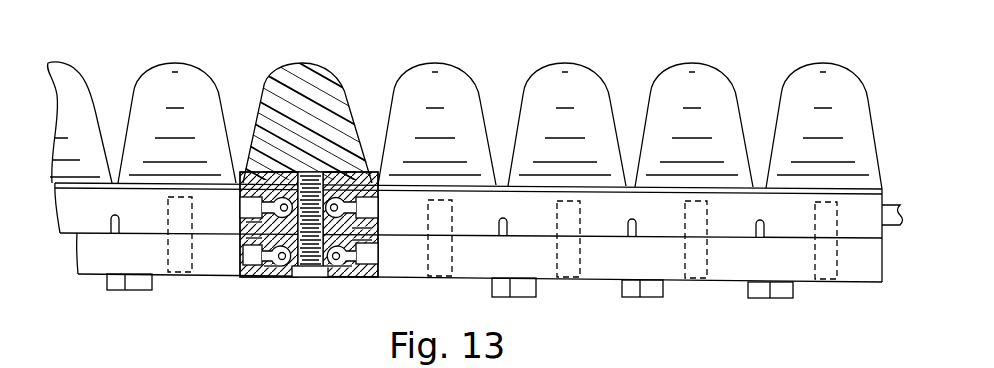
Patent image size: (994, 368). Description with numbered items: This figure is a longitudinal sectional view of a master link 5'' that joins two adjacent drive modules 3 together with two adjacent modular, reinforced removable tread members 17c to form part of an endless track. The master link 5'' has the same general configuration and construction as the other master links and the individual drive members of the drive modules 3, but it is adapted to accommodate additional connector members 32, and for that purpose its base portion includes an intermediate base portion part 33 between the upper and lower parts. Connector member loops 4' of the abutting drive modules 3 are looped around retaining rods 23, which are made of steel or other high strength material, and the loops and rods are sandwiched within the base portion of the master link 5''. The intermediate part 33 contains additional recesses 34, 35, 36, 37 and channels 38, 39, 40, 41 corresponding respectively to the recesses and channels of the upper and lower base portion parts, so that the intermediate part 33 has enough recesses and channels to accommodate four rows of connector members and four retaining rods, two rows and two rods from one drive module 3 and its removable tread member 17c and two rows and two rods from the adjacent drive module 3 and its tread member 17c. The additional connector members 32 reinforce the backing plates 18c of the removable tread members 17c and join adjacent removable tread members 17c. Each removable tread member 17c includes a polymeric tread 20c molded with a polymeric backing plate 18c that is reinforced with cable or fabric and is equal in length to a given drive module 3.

The drive module 3 is at (177, 57).
The master link 5'' is at (315, 138).
The connector member loop 4' is at (321, 138).
The retaining rod 23 is at (309, 232).
The intermediate base portion part 33 is at (253, 223).
The channel 38 is at (268, 219).
The channel 39 is at (257, 245).
The additional connector member 32 is at (258, 255).
The recess 35 is at (265, 268).
The recess 34 is at (300, 276).
The recess 36 is at (333, 275).
The recess 37 is at (357, 266).
The channel 40 is at (378, 209).
The channel 41 is at (377, 232).
The backing plate 18c is at (600, 275).
The removable tread member 17c is at (654, 299).
The polymeric tread 20c is at (776, 286).